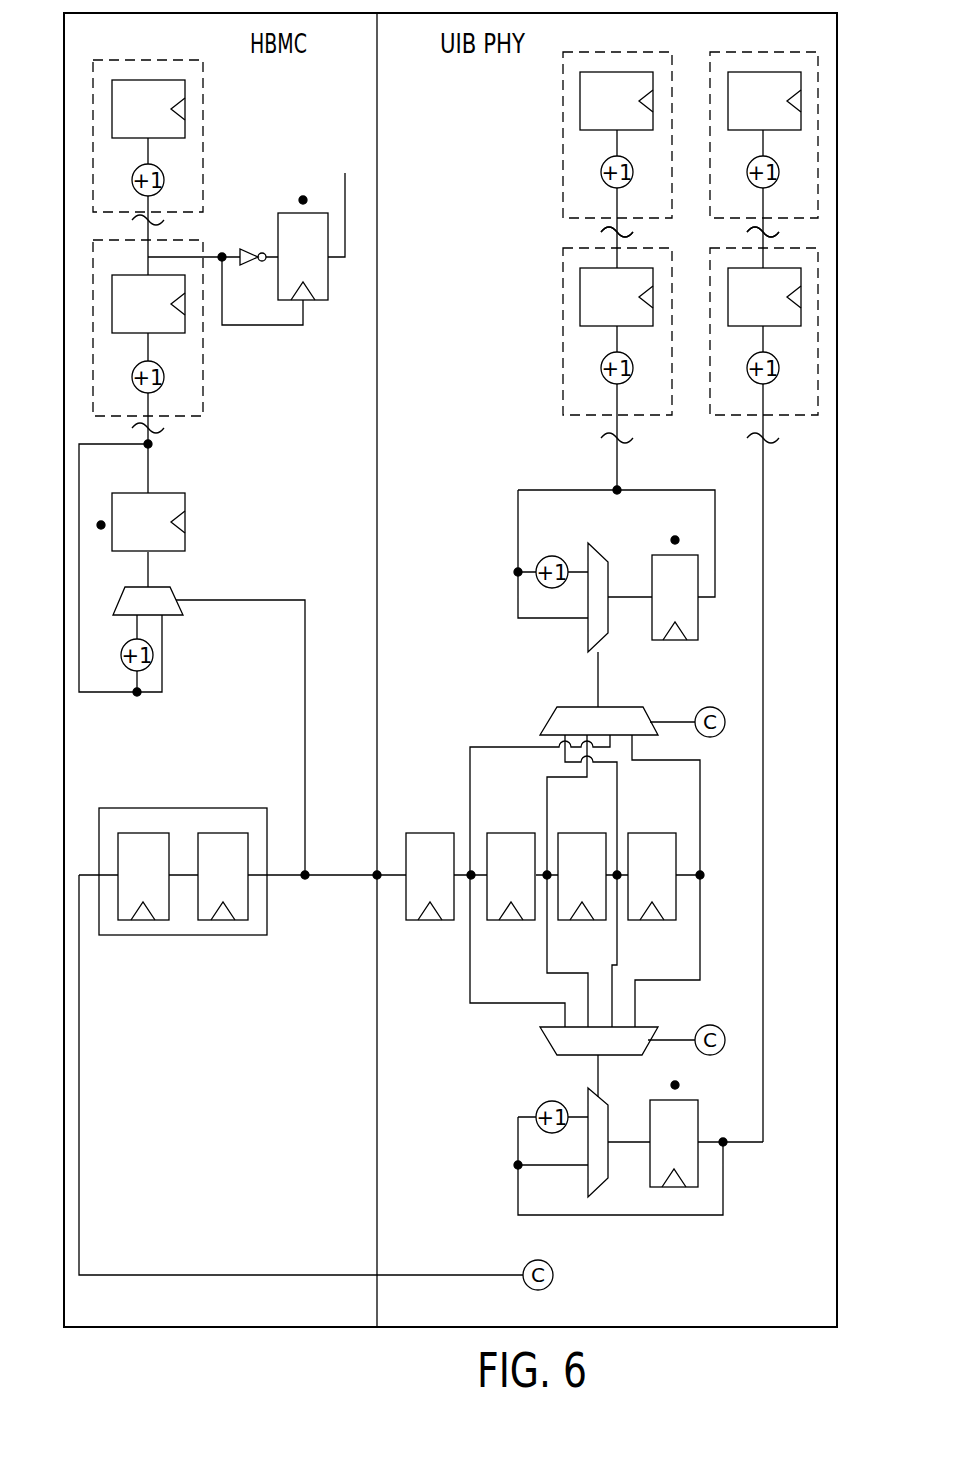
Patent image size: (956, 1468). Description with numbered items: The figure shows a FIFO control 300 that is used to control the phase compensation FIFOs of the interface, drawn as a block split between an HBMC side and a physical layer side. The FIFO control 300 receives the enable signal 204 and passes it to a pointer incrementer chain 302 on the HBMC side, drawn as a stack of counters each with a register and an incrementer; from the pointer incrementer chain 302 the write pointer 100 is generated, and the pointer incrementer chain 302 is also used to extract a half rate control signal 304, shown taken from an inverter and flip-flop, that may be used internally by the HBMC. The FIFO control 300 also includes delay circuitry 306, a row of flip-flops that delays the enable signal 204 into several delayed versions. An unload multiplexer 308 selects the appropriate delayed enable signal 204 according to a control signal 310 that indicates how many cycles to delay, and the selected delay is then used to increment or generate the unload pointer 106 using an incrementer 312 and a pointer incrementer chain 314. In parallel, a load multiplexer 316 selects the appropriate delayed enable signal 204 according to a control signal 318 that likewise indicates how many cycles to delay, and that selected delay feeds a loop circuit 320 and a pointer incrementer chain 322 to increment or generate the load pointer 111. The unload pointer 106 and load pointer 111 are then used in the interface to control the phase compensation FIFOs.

The FIFO control 300 is at (278, 1347).
The pointer incrementer chain 302 is at (55, 123).
The half rate control signal 304 is at (345, 200).
The write pointer 100 is at (160, 222).
The enable signal 204 is at (280, 876).
The delay circuitry 306 is at (716, 893).
The pointer incrementer chain 322 is at (530, 127).
The pointer incrementer chain 314 is at (848, 123).
The input-output load pointer 111 is at (617, 232).
The input-output unload pointer 106 is at (763, 233).
The counter loop circuit 320 is at (740, 557).
The load multiplexer 316 is at (548, 722).
The control signal 318 is at (710, 707).
The unload multiplexer 308 is at (548, 1043).
The control signal 310 is at (710, 1025).
The incrementer 312 is at (508, 1150).